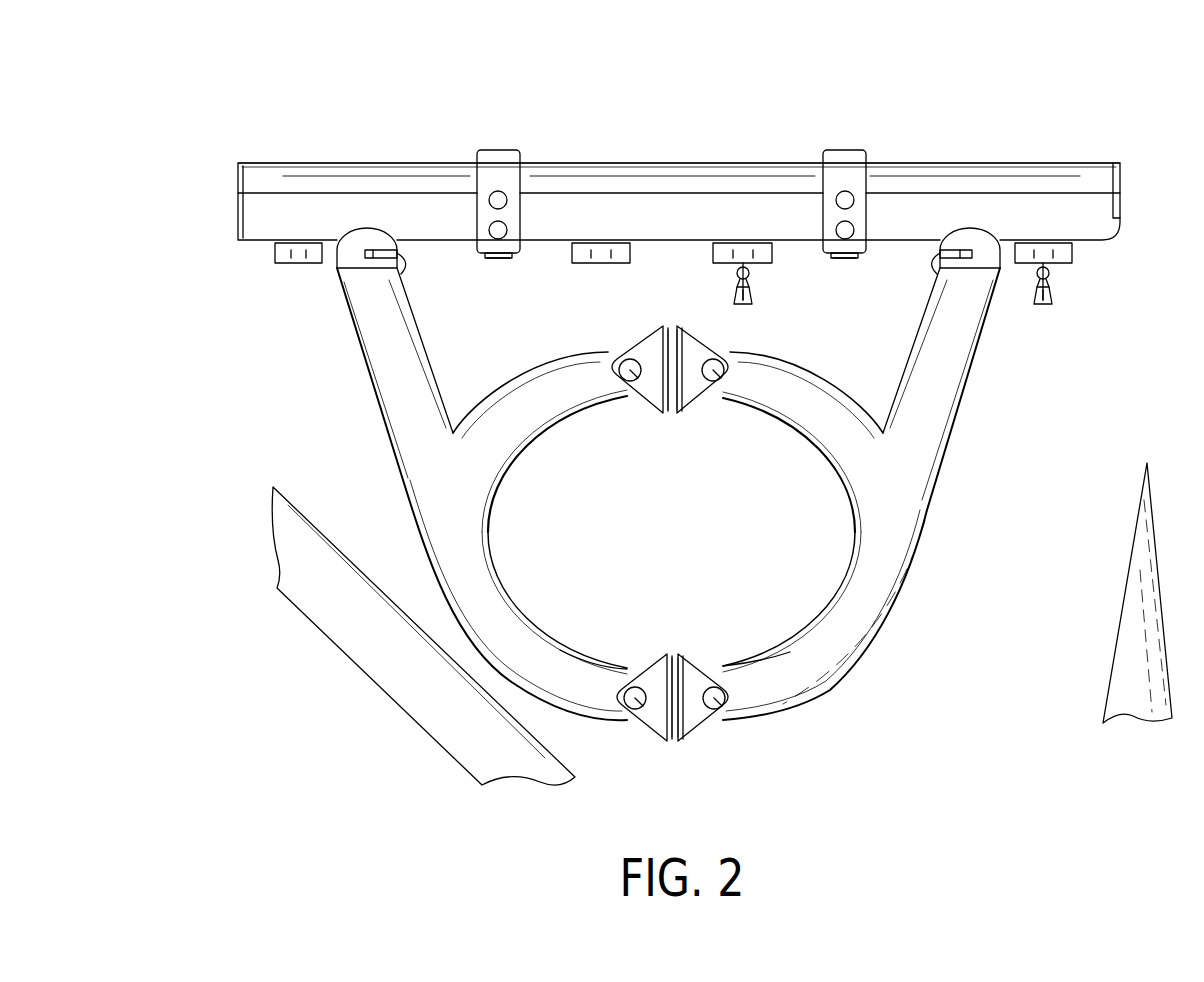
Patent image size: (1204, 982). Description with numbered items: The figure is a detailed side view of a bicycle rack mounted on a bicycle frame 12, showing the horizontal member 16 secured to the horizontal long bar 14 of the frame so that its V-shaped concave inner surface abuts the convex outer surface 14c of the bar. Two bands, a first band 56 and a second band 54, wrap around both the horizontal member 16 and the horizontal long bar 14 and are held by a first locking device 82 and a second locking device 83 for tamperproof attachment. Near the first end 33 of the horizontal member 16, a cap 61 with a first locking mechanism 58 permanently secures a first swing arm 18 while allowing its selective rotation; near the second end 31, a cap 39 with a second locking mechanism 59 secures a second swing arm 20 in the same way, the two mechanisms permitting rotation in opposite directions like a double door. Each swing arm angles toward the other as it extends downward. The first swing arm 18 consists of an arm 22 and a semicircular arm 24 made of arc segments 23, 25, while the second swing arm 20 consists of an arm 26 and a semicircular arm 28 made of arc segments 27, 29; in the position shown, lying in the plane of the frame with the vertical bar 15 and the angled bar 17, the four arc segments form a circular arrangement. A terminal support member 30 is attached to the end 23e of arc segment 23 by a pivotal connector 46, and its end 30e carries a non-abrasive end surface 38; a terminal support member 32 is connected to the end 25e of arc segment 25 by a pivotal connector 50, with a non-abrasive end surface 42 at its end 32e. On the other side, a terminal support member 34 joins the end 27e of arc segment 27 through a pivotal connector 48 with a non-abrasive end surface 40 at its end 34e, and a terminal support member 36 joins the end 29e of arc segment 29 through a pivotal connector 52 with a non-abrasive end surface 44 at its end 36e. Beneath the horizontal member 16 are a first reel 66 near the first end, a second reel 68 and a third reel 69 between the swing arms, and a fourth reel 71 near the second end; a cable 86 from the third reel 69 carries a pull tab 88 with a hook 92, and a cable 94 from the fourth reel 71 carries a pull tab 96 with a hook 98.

The bicycle frame 12 is at (356, 143).
The horizontal long bar 14 is at (1002, 160).
The convex outer surface 14c is at (700, 160).
The vertical bar 15 is at (1122, 660).
The horizontal member 16 is at (237, 208).
The angled bar 17 is at (395, 686).
The first swing arm 18 is at (376, 412).
The second swing arm 20 is at (930, 514).
The arm 22 is at (362, 345).
The arc segment 23 is at (490, 390).
The end of arc segment 23e is at (573, 412).
The semicircular arm 24 is at (555, 365).
The arc segment 25 is at (567, 658).
The end of arc segment 25e is at (607, 668).
The arm 26 is at (944, 420).
The arc segment 27 is at (862, 395).
The end of arc segment 27e is at (765, 360).
The semicircular arm 28 is at (835, 475).
The arc segment 29 is at (840, 586).
The end of arc segment 29e is at (778, 660).
The terminal support member 30 is at (650, 410).
The end of terminal support member 30e is at (667, 413).
The second end 31 is at (1087, 195).
The terminal support member 32 is at (633, 670).
The end of terminal support member 32e is at (668, 745).
The first end 33 is at (272, 207).
The terminal support member 34 is at (700, 397).
The end of terminal support member 34e is at (705, 338).
The terminal support member 36 is at (700, 670).
The end of terminal support member 36e is at (684, 657).
The non-abrasive end surface 38 is at (660, 324).
The cap 39 is at (990, 262).
The non-abrasive end surface 40 is at (677, 413).
The non-abrasive end surface 42 is at (675, 650).
The non-abrasive end surface 44 is at (688, 742).
The pivotal connector 46 is at (620, 366).
The pivotal connector 48 is at (750, 383).
The pivotal connector 50 is at (636, 706).
The pivotal connector 52 is at (716, 706).
The second band 54 is at (845, 152).
The first band 56 is at (505, 152).
The first locking mechanism 58 is at (398, 255).
The second locking mechanism 59 is at (922, 268).
The cap 61 is at (395, 235).
The first reel 66 is at (290, 262).
The second reel 68 is at (615, 263).
The third reel 69 is at (750, 240).
The fourth reel 71 is at (1075, 252).
The first locking device 82 is at (493, 258).
The second locking device 83 is at (848, 258).
The cable 86 is at (750, 273).
The pull tab 88 is at (738, 275).
The hook 92 is at (752, 298).
The cable 94 is at (1055, 282).
The pull tab 96 is at (1052, 300).
The hook 98 is at (1045, 308).